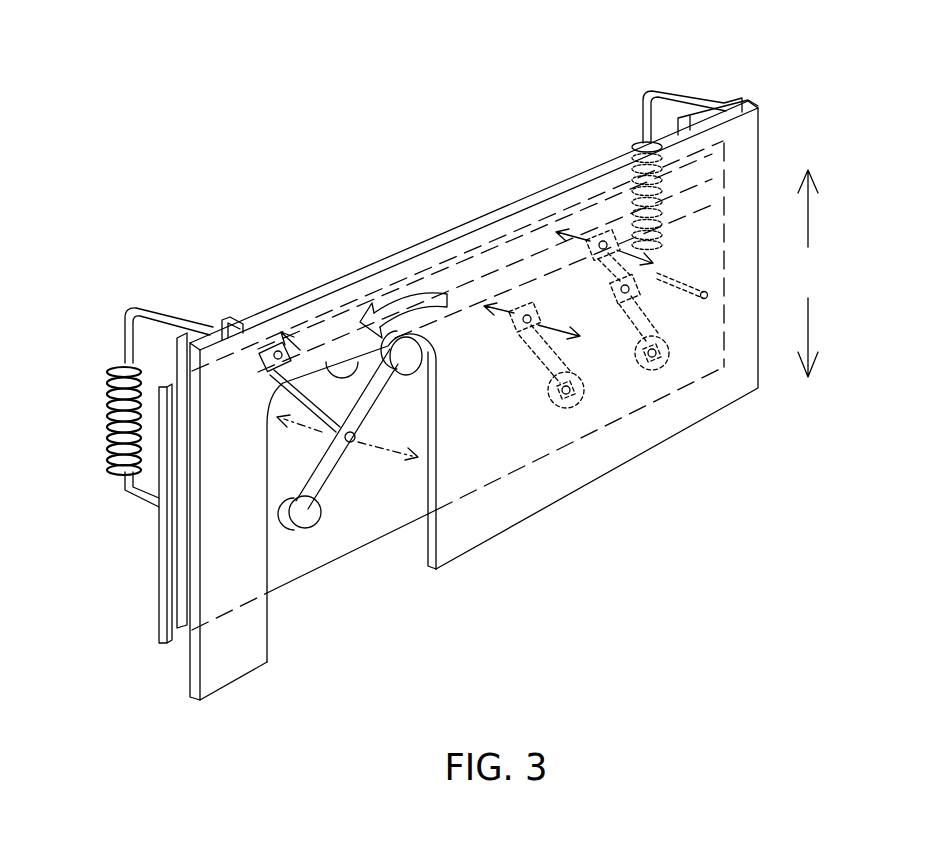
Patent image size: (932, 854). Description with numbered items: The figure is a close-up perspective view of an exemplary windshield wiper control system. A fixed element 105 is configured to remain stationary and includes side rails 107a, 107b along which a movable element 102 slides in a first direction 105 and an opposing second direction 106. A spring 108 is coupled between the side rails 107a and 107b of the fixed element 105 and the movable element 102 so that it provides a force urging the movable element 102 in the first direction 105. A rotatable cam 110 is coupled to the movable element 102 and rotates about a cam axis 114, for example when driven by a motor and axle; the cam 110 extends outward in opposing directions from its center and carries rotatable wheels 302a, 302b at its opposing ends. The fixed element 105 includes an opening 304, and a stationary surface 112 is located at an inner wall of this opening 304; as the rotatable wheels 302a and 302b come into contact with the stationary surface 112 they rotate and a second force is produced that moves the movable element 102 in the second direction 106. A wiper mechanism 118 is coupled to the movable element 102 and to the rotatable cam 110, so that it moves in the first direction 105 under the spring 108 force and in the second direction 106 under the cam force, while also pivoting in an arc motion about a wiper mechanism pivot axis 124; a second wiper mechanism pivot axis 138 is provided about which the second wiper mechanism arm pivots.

The movable element 102 is at (158, 558).
The fixed element 105 is at (810, 212).
The second direction 106 is at (810, 336).
The side rail 107a is at (725, 90).
The side rail 107b is at (183, 580).
The spring 108 is at (112, 387).
The rotatable cam 110 is at (340, 458).
The stationary surface 112 is at (345, 415).
The cam axis 114 is at (380, 447).
The wiper mechanism 118 is at (650, 278).
The wiper mechanism pivot axis 124 is at (573, 237).
The second wiper mechanism pivot axis 138 is at (497, 313).
The rotatable wheel 302a is at (406, 337).
The rotatable wheel 302b is at (303, 528).
The opening 304 is at (397, 488).